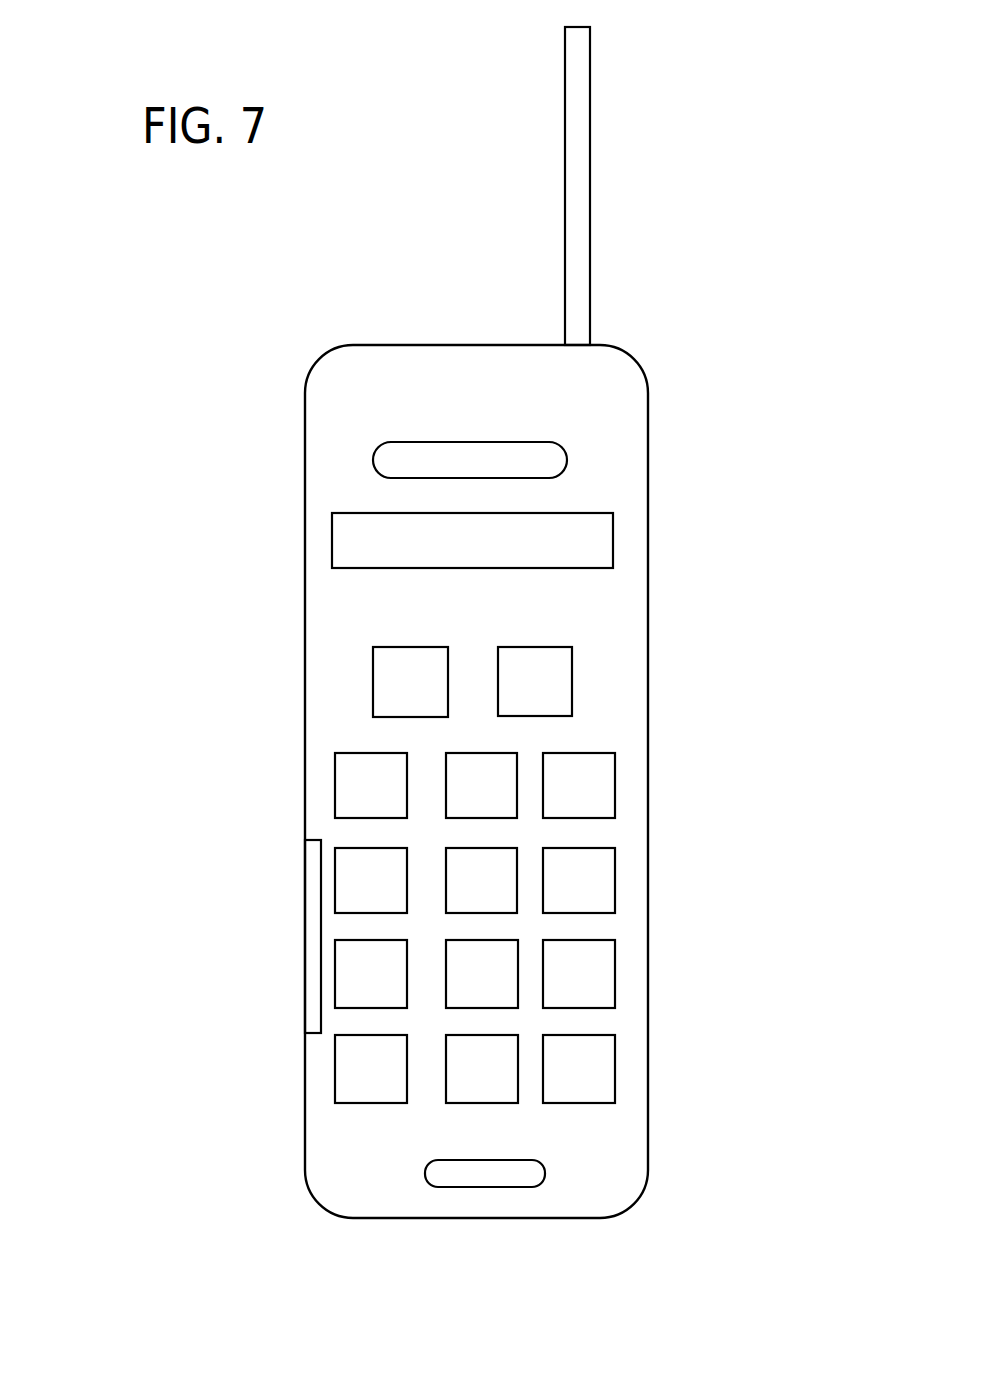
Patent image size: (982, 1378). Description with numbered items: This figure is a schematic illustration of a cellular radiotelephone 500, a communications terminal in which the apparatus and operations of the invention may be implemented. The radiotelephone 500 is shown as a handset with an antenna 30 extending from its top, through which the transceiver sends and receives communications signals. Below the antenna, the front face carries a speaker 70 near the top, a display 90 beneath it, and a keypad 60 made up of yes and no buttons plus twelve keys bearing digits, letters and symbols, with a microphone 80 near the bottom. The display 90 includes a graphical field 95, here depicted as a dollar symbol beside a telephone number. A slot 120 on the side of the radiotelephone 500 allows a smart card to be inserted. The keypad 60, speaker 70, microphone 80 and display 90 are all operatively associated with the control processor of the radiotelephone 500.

The antenna 30 is at (590, 115).
The keypad 60 is at (672, 634).
The speaker 70 is at (567, 457).
The microphone 80 is at (530, 1183).
The display 90 is at (613, 520).
The graphical field 95 is at (353, 543).
The slot 120 is at (313, 942).
The cellular radiotelephone 500 is at (222, 1098).